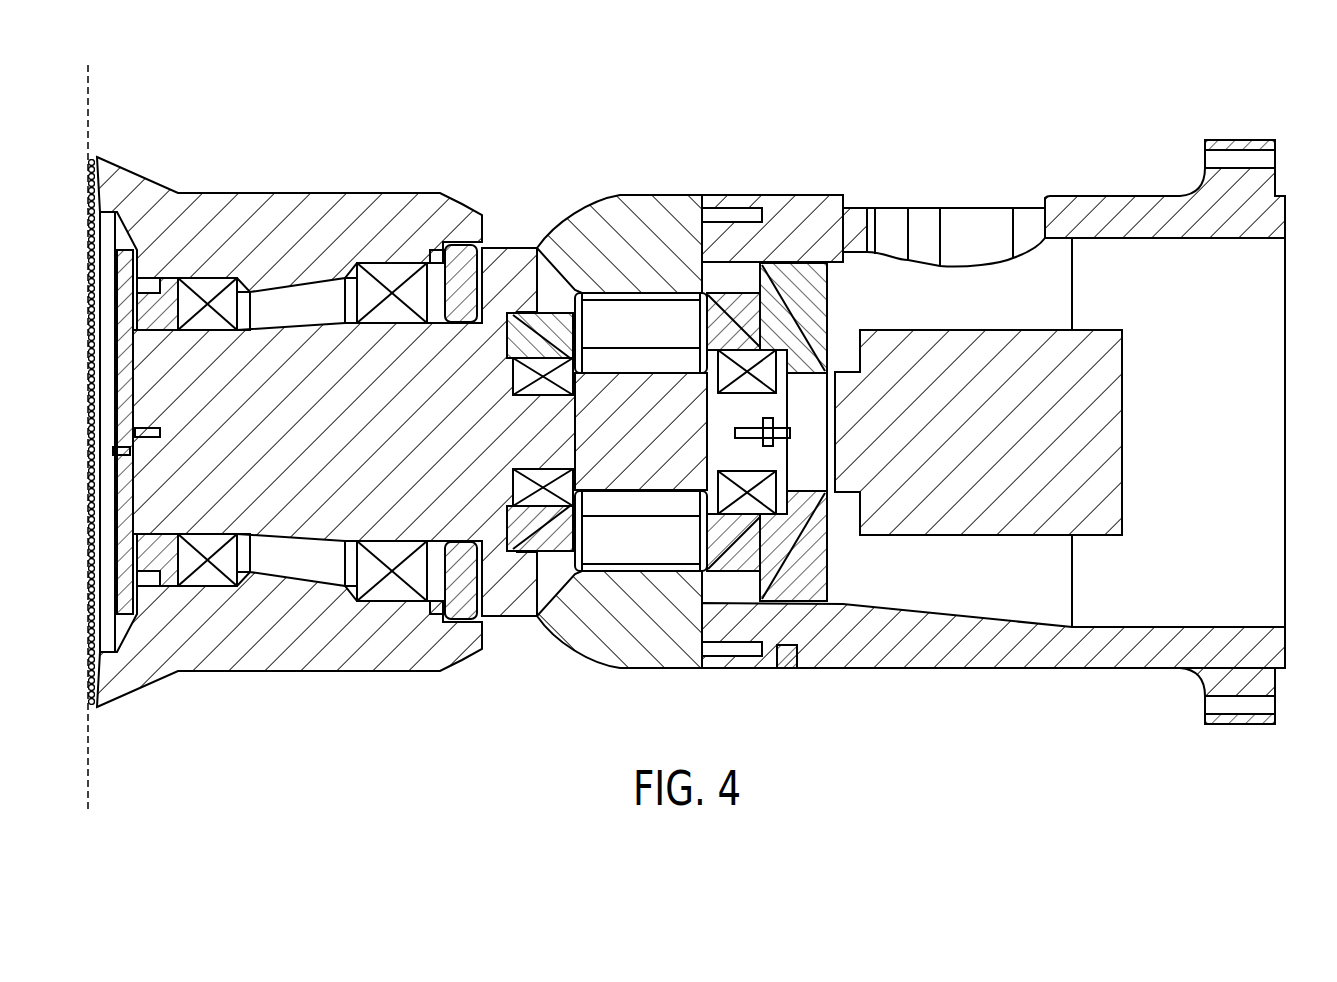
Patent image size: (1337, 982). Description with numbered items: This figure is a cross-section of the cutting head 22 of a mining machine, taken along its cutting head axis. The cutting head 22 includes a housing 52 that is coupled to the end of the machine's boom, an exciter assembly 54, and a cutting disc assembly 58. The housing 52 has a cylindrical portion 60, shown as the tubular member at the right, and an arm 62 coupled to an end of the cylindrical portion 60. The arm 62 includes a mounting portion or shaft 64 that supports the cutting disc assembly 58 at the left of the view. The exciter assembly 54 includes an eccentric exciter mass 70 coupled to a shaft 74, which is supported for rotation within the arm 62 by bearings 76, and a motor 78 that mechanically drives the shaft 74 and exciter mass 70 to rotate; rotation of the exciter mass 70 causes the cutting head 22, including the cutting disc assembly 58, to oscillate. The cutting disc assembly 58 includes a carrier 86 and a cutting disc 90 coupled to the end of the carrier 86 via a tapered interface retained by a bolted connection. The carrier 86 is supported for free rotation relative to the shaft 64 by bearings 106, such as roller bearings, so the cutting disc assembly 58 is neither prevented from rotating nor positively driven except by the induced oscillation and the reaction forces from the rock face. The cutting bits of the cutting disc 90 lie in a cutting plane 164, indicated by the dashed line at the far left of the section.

The cutting head 22 is at (650, 76).
The housing 52 is at (825, 129).
The exciter assembly 54 is at (840, 590).
The cutting disc assembly 58 is at (409, 129).
The cylindrical portion 60 is at (1112, 205).
The arm 62 is at (599, 184).
The shaft 64 is at (273, 525).
The eccentric exciter mass 70 is at (617, 540).
The shaft 74 is at (633, 440).
The bearings 76 is at (760, 372).
The motor 78 is at (985, 515).
The carrier 86 is at (307, 205).
The cutting disc 90 is at (134, 139).
The bearings 106 is at (218, 292).
The cutting plane 164 is at (92, 762).